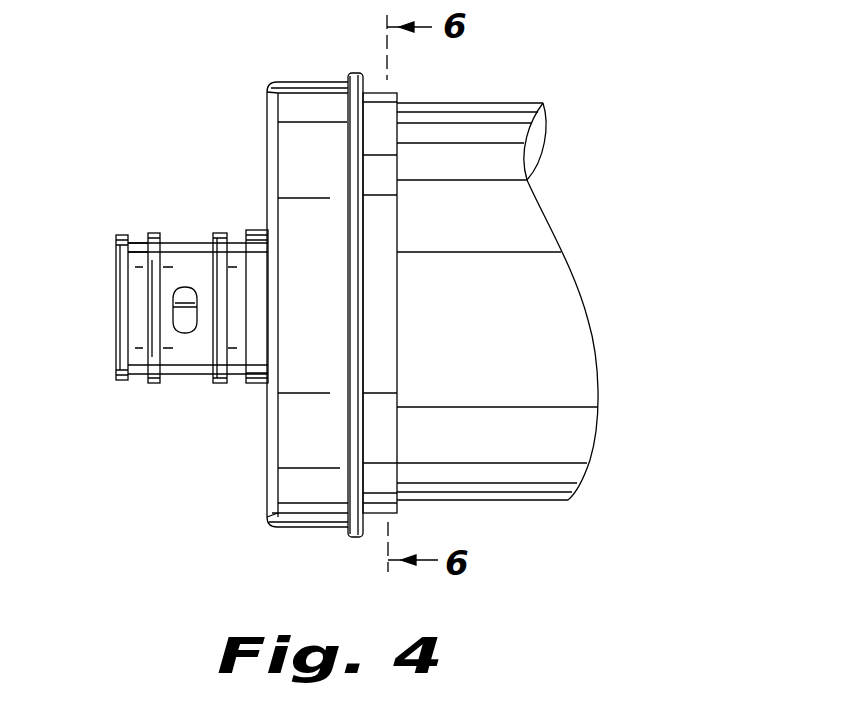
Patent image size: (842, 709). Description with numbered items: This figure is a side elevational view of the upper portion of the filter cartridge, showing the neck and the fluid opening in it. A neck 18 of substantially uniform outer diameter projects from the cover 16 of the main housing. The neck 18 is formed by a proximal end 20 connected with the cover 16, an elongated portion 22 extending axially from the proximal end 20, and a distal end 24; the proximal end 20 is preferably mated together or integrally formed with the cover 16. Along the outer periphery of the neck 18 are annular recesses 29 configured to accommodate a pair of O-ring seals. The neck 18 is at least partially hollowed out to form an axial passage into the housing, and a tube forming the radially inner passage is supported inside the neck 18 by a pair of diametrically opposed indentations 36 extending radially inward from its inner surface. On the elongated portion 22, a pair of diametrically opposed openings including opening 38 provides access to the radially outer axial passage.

The cover 16 is at (267, 140).
The neck 18 is at (222, 384).
The proximal end 20 is at (255, 230).
The elongated portion 22 is at (195, 245).
The distal end 24 is at (122, 267).
The annular recesses 29 is at (133, 239).
The indentations 36 is at (178, 288).
The opening 38 is at (187, 323).